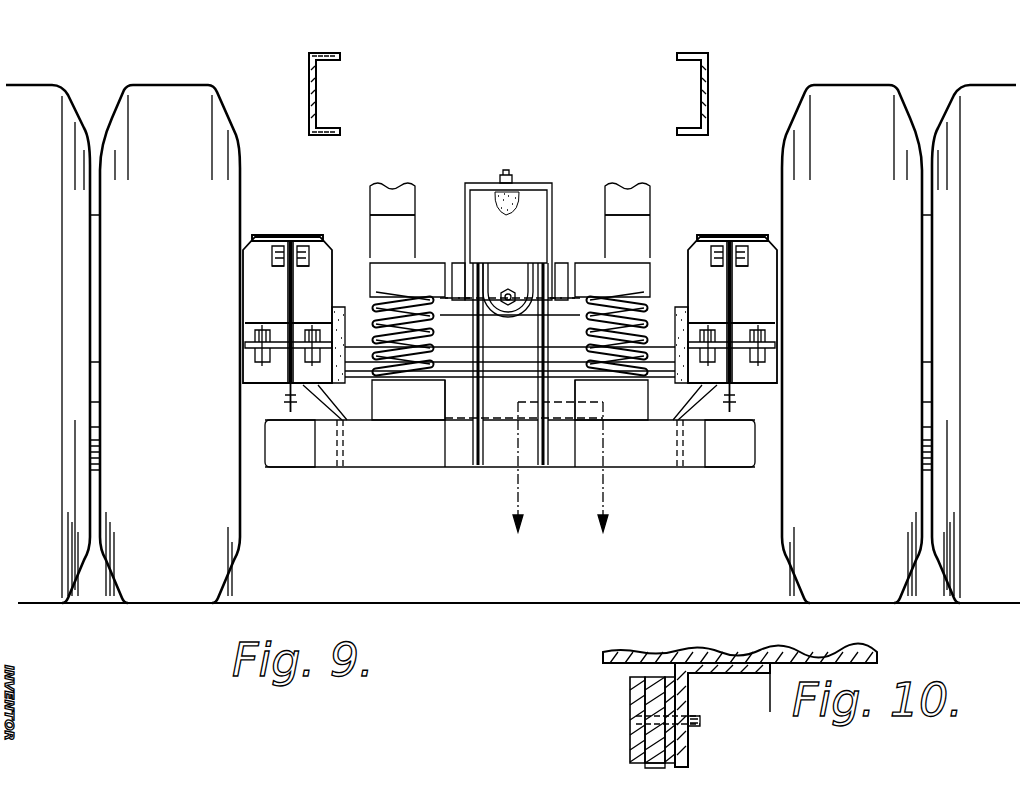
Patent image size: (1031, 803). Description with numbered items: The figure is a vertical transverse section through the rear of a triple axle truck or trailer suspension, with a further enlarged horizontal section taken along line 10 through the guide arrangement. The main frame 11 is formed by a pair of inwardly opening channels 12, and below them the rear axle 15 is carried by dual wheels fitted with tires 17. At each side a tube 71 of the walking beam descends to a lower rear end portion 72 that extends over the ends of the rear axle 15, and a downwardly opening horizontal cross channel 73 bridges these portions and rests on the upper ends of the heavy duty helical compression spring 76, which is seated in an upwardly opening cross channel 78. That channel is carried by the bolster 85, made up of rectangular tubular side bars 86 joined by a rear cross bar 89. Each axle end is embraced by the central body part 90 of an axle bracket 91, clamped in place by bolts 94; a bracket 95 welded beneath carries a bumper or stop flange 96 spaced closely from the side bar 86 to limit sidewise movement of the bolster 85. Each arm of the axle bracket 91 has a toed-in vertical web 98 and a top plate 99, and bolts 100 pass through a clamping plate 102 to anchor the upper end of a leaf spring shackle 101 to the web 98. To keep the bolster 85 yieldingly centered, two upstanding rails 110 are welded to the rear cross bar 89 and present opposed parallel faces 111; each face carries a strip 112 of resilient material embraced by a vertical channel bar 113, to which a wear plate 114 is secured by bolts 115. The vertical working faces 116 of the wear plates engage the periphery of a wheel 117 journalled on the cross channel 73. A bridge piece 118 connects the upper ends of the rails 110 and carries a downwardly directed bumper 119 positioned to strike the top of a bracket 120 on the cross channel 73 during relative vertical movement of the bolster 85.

In FIG. 9, the section line 10 is at (558, 480).
In FIG. 9, the main frame 11 is at (702, 52).
In FIG. 9, the inwardly opening channels 12 is at (340, 60).
In FIG. 9, the rear axle 15 is at (358, 322).
In FIG. 9, the tires 17 is at (28, 86).
In FIG. 9, the tube 71 is at (394, 190).
In FIG. 9, the lower rear end portion 72 is at (404, 222).
In FIG. 9, the downwardly opening horizontal cross channel 73 is at (422, 274).
In FIG. 9, the heavy duty helical compression spring 76 is at (103, 82).
In FIG. 9, the upwardly opening cross channel 78 is at (398, 412).
In FIG. 9, the bolster 85 is at (414, 474).
In FIG. 10, the bolster 85 is at (864, 652).
In FIG. 9, the side bars 86 is at (276, 474).
In FIG. 9, the rear cross bar 89 is at (250, 302).
In FIG. 10, the rear cross bar 89 is at (880, 664).
In FIG. 9, the central body part 90 is at (316, 262).
In FIG. 9, the axle bracket 91 is at (282, 218).
In FIG. 9, the bolts 94 is at (310, 332).
In FIG. 9, the bracket 95 is at (290, 394).
In FIG. 9, the bumper or stop flange 96 is at (340, 472).
In FIG. 9, the vertical web 98 is at (292, 242).
In FIG. 9, the top plate 99 is at (270, 234).
In FIG. 9, the bolts 100 is at (272, 256).
In FIG. 9, the leaf spring shackle 101 is at (272, 268).
In FIG. 9, the clamping plate 102 is at (786, 246).
In FIG. 9, the upstanding rails 110 is at (460, 456).
In FIG. 10, the upstanding rails 110 is at (772, 698).
In FIG. 9, the opposed parallel faces 111 is at (530, 392).
In FIG. 10, the opposed parallel faces 111 is at (628, 698).
In FIG. 10, the strip 112 is at (686, 694).
In FIG. 10, the vertical channel bar 113 is at (650, 770).
In FIG. 10, the wear plate 114 is at (640, 748).
In FIG. 10, the bolts 115 is at (702, 722).
In FIG. 10, the vertical working faces 116 is at (636, 722).
In FIG. 9, the wheel 117 is at (508, 316).
In FIG. 9, the bridge piece 118 is at (540, 186).
In FIG. 9, the bumper 119 is at (496, 222).
In FIG. 9, the bracket 120 is at (526, 258).